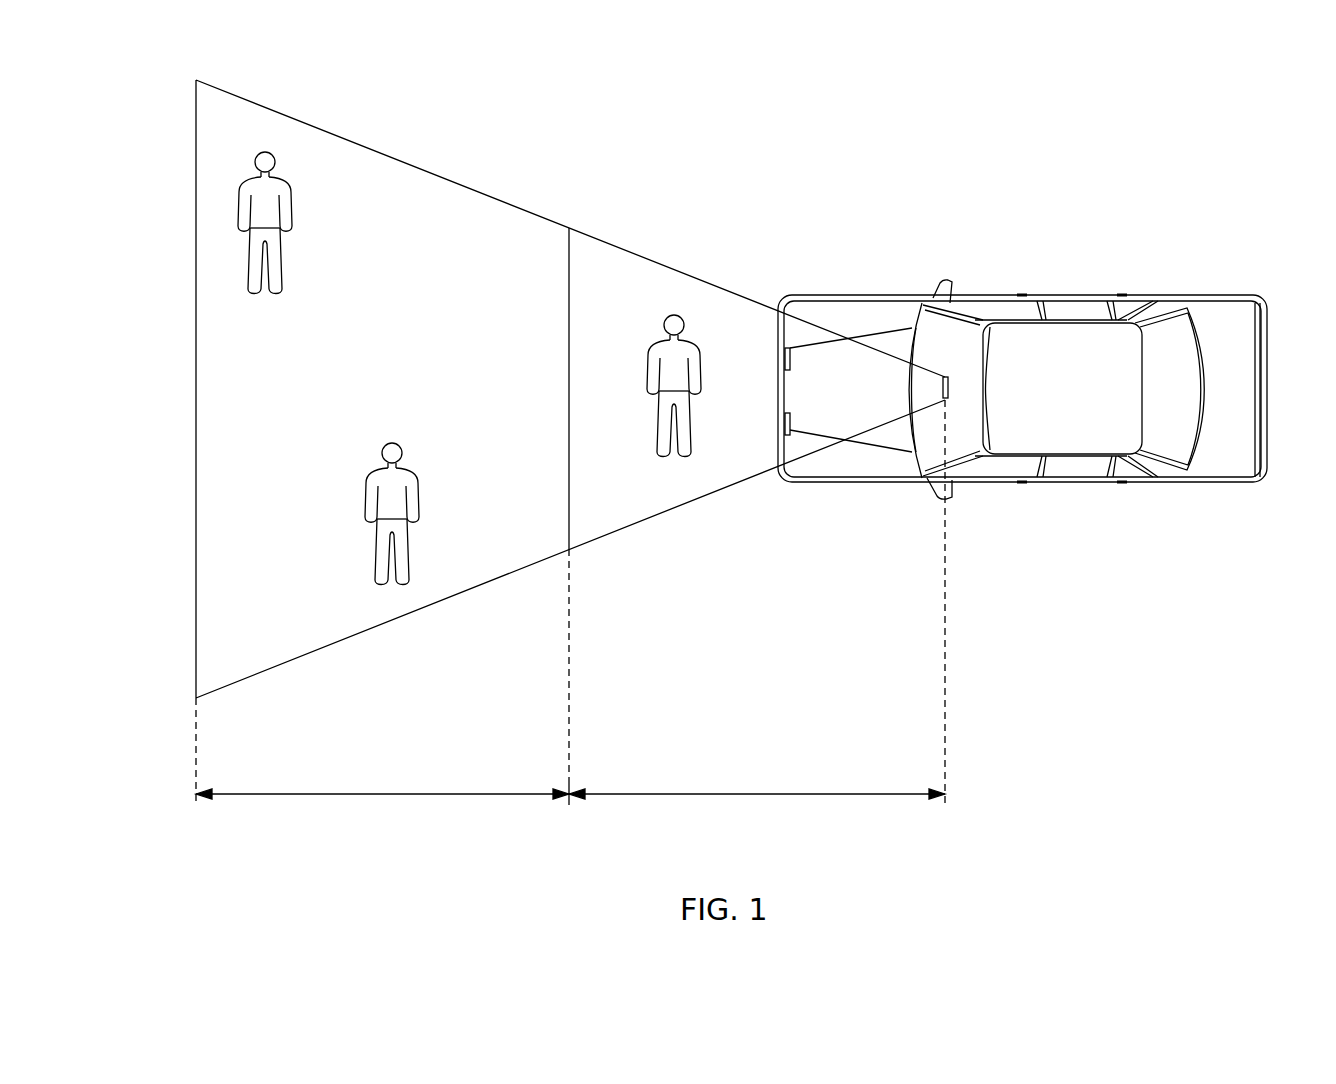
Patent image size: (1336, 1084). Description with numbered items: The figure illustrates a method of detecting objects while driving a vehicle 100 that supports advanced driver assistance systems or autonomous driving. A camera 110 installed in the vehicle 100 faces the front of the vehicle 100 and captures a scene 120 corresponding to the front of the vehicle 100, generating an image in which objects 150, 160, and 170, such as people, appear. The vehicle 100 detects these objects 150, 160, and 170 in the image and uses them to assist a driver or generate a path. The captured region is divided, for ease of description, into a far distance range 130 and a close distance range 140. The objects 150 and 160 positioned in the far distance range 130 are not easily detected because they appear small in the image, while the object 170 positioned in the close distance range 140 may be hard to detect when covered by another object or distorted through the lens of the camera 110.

The vehicle 100 is at (1070, 295).
The camera 110 is at (947, 377).
The scene 120 is at (195, 183).
The far distance range 130 is at (382, 526).
The close distance range 140 is at (757, 612).
The object 150 is at (292, 210).
The object 160 is at (420, 498).
The object 170 is at (650, 368).